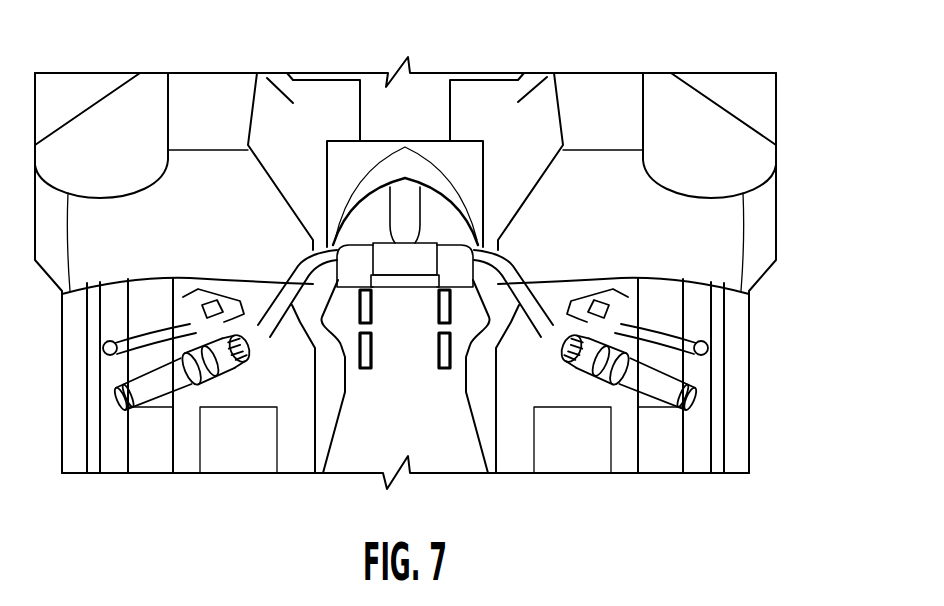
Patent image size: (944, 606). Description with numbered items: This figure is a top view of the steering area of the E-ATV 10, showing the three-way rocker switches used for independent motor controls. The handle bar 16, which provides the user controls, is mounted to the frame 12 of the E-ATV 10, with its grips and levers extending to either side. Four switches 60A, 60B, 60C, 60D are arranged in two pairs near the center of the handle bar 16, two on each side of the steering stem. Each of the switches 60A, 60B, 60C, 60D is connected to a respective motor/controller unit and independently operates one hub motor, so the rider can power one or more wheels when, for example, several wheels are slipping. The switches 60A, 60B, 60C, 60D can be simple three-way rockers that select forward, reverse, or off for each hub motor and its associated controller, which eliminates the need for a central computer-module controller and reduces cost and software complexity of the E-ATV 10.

The E-ATV 10 is at (504, 38).
The frame 12 is at (497, 396).
The handle bar 16 is at (662, 384).
The switch 60A is at (447, 305).
The switch 60B is at (447, 366).
The switch 60C is at (358, 305).
The switch 60D is at (367, 366).